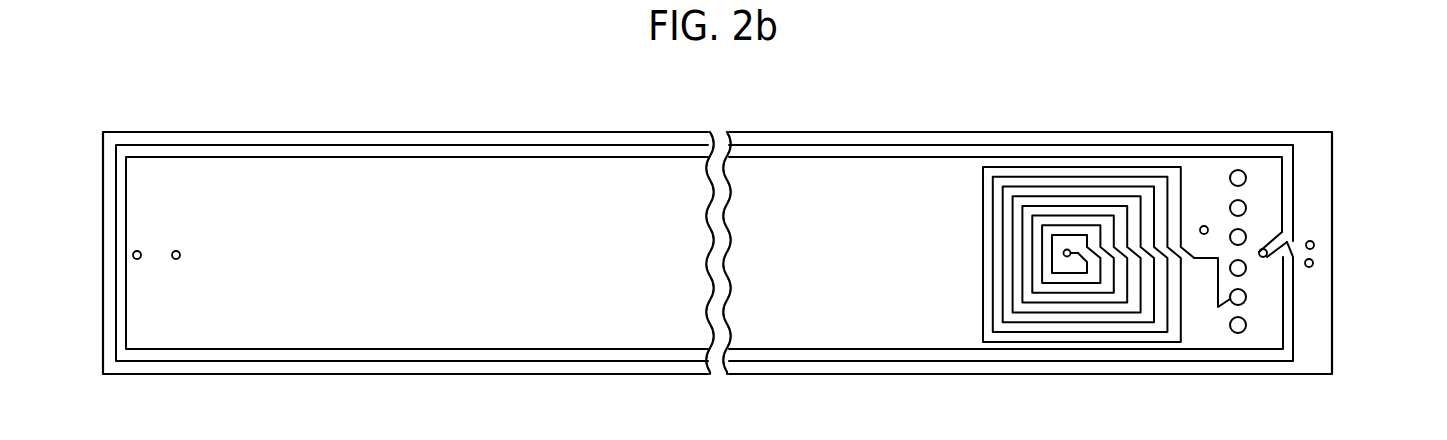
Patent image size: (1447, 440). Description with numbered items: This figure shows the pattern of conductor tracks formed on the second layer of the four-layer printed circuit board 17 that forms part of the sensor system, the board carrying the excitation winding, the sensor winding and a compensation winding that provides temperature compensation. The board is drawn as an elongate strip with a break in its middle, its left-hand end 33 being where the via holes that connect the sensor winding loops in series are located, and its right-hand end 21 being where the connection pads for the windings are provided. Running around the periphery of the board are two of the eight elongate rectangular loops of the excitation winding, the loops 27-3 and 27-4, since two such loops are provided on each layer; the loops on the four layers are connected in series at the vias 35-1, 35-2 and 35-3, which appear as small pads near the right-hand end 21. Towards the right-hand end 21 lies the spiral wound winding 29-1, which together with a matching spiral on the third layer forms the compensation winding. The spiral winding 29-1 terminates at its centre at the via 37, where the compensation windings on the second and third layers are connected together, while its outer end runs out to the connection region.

The printed circuit board 17 is at (632, 132).
The excitation winding loop 27-3 is at (828, 145).
The excitation winding loop 27-4 is at (920, 157).
The spiral wound winding 29-1 is at (983, 240).
The via 37 is at (1067, 249).
The right-hand end 21 is at (1274, 380).
The left-hand end 33 is at (162, 382).
The via 35-1 is at (1314, 245).
The via 35-2 is at (1312, 267).
The via 35-3 is at (1267, 250).